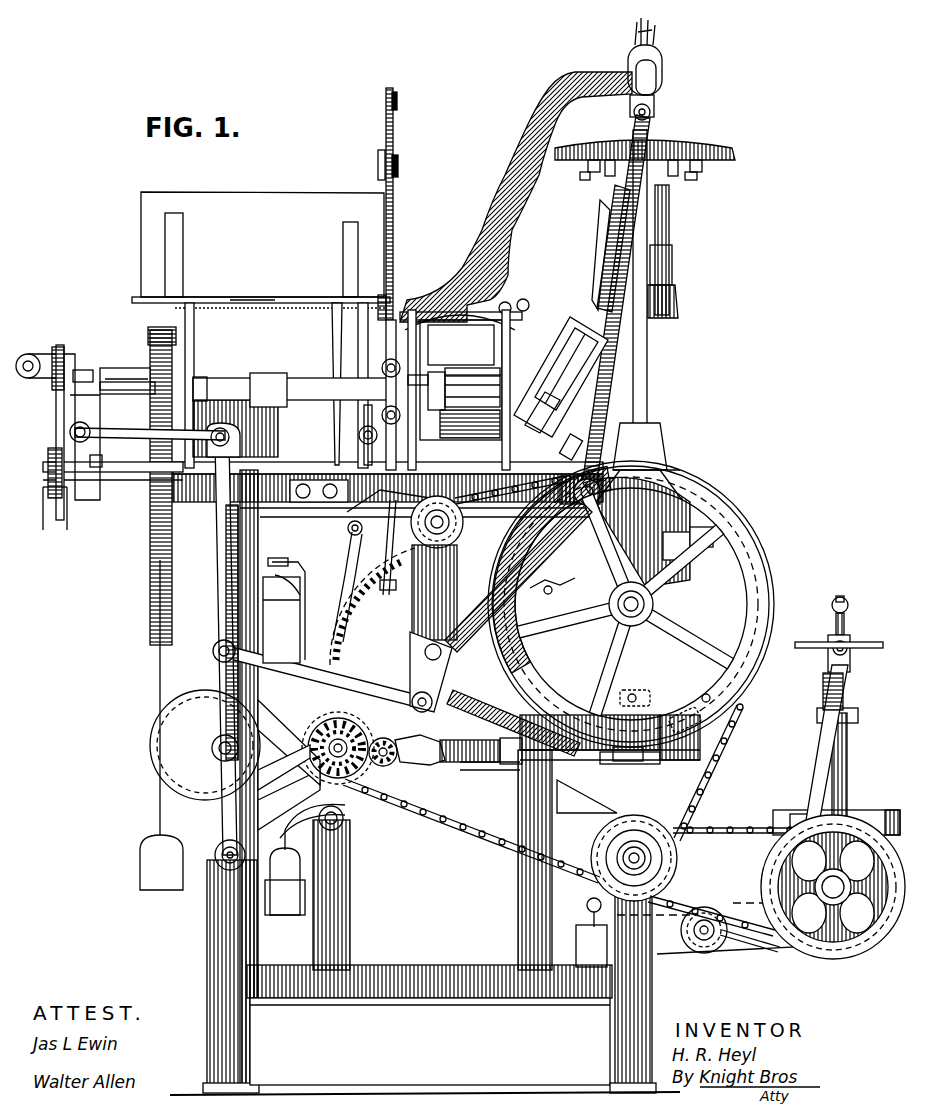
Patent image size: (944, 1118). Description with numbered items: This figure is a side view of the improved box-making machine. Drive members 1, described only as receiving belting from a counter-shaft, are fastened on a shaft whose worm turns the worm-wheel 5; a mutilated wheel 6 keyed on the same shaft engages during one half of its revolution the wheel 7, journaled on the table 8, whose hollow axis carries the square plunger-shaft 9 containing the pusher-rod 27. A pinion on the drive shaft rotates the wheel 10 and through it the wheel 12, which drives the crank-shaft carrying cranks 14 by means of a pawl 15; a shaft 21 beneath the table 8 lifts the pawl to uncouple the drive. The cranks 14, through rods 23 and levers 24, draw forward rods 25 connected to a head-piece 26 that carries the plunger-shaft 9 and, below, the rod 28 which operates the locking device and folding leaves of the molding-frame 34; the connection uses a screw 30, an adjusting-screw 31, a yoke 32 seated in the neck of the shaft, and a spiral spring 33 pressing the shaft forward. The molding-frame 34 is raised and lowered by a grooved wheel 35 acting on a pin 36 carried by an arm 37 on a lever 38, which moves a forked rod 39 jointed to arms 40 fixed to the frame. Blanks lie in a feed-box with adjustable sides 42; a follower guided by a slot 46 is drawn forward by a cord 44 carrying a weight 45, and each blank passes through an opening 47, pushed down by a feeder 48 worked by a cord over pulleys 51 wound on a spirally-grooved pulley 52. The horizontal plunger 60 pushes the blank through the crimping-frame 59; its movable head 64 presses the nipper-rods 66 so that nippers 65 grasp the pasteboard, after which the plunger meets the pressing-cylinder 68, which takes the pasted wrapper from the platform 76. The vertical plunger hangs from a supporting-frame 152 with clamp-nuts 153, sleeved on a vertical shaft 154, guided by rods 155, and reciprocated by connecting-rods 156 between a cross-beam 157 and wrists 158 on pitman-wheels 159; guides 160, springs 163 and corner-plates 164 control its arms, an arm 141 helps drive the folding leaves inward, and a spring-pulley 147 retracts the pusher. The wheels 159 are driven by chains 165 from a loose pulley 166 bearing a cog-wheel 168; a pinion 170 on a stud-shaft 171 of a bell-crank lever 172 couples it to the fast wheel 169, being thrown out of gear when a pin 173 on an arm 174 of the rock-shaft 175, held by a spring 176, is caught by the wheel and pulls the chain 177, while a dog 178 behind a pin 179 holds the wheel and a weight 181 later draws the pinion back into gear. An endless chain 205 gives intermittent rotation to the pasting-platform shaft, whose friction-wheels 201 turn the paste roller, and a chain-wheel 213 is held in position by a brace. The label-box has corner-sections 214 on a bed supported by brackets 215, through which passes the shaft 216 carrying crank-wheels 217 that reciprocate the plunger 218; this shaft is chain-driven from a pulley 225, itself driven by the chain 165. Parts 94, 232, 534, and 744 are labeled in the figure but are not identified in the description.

The swinging arm 1 is at (205, 650).
The worm-wheel 5 is at (231, 632).
The mutilated wheel 6 is at (154, 487).
The wheel 7 is at (162, 336).
The table 8 is at (388, 484).
The plunger-shaft 9 is at (290, 415).
The wheel 10 is at (284, 748).
The wheel 12 is at (350, 606).
The crank 14 is at (431, 672).
The pawl 15 is at (433, 652).
The shaft 21 is at (225, 632).
The rod 23 is at (322, 676).
The lever 24 is at (113, 471).
The rod 25 is at (149, 434).
The head-piece 26 is at (85, 442).
The pusher-rod 27 is at (53, 432).
The rod 28 is at (49, 473).
The screw 30 is at (100, 454).
The adjusting-screw 31 is at (127, 393).
The yoke 32 is at (393, 547).
The spiral spring 33 is at (90, 369).
The molding-frame 34 is at (72, 368).
The wheel 35 is at (281, 620).
The pin 36 is at (294, 582).
The arm 37 is at (297, 605).
The lever 38 is at (347, 587).
The forked rod 39 is at (363, 526).
The arm 40 is at (578, 446).
The side of feed-box 42 is at (262, 244).
The cord 44 is at (261, 308).
The longitudinal slot 46 is at (252, 293).
The transverse slot 47 is at (378, 301).
The feeder 48 is at (374, 165).
The pulley 51 is at (401, 203).
The spirally-grooved pulley 52 is at (404, 163).
The crimping-frame 59 is at (396, 395).
The horizontal plunger 60 is at (472, 391).
The movable head 64 is at (431, 391).
The nipper 65 is at (472, 367).
The nipper-rod 66 is at (470, 423).
The pressing-cylinder 68 is at (459, 390).
The platform 76 is at (501, 626).
The type carrier 94 is at (561, 377).
The arm 141 is at (418, 373).
The spring-pulley 147 is at (43, 361).
The supporting-frame 152 is at (645, 155).
The clamp-nut 153 is at (650, 171).
The vertical shaft 154 is at (654, 56).
The rod 155 is at (627, 305).
The connecting-rod 156 is at (614, 250).
The cross-beam 157 is at (653, 107).
The wrist 158 is at (592, 490).
The wheel 159 is at (631, 604).
The guide 160 is at (673, 250).
The spring 163 is at (471, 831).
The corner-plate 164 is at (670, 281).
The chain 165 is at (708, 772).
The loose pulley 166 is at (338, 748).
The cog-wheel 168 is at (338, 748).
The fast wheel 169 is at (387, 748).
The pinion 170 is at (418, 755).
The stud-shaft 171 is at (455, 751).
The bell-crank lever 172 is at (312, 820).
The pin 173 is at (628, 746).
The arm 174 is at (630, 758).
The rock-shaft 175 is at (610, 739).
The spring 176 is at (501, 770).
The chain 177 is at (465, 775).
The dog 178 is at (638, 702).
The pin 179 is at (699, 713).
The weight 181 is at (285, 872).
The friction-wheel 201 is at (631, 604).
The endless chain 205 is at (552, 581).
The chain-wheel 213 is at (845, 763).
The corner-section 214 is at (836, 813).
The bracket 215 is at (838, 706).
The shaft 216 is at (831, 887).
The crank-wheel 217 is at (749, 861).
The plunger 218 is at (833, 887).
The pulley 225 is at (634, 858).
The rail 232 is at (540, 292).
The rod 534 is at (368, 428).
The shaft 744 is at (129, 370).
The weight 45 is at (161, 725).